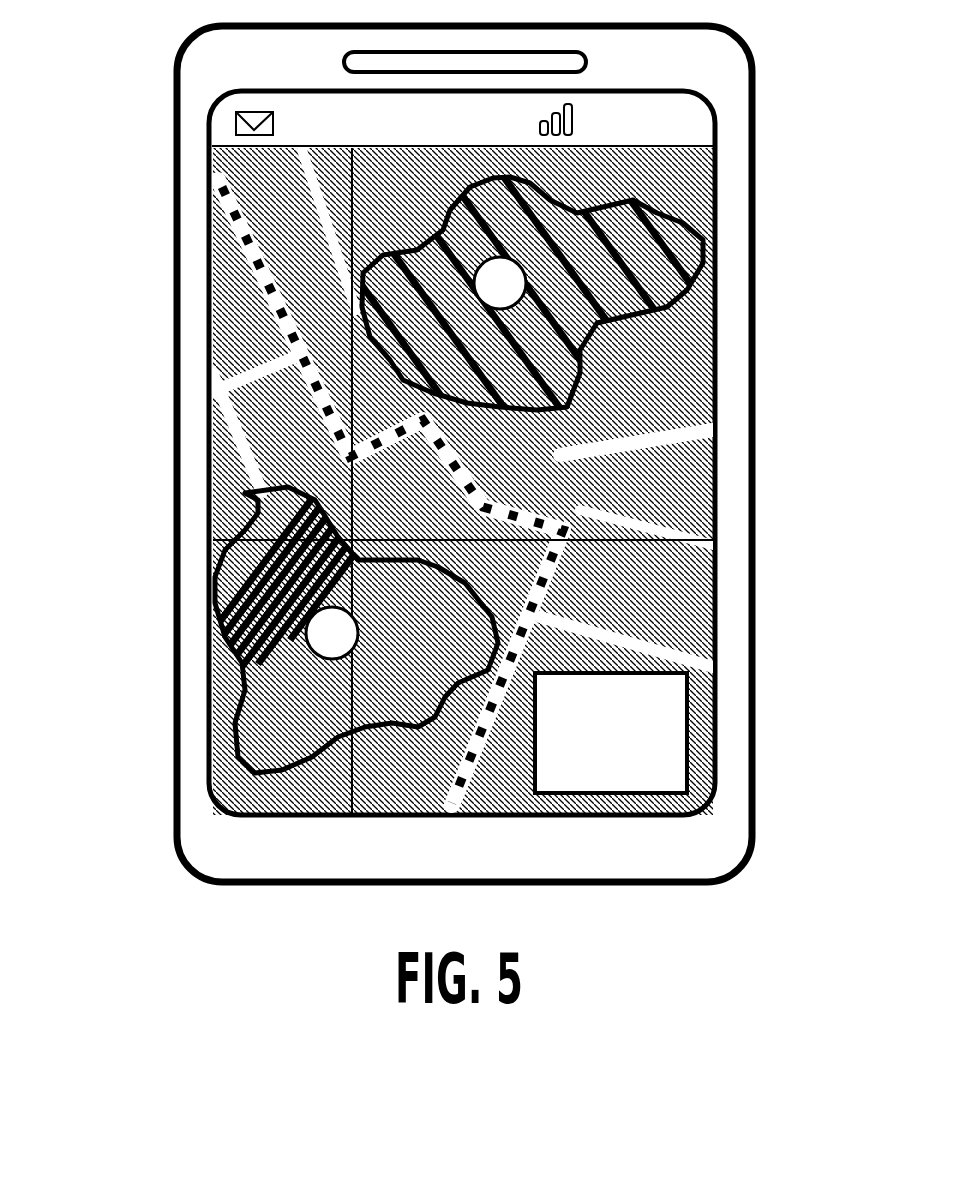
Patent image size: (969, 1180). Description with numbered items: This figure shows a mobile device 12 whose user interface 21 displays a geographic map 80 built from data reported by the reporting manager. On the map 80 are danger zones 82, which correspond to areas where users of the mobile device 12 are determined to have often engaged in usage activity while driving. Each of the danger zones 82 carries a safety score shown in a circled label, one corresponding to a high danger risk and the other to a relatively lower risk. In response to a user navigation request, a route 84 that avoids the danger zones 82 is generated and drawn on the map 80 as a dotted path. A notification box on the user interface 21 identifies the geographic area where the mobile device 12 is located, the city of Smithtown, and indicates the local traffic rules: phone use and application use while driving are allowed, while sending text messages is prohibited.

The mobile device 12 is at (170, 304).
The user interface 21 is at (204, 380).
The map 80 is at (253, 453).
The danger zones 82 is at (703, 262).
The route 84 is at (547, 578).